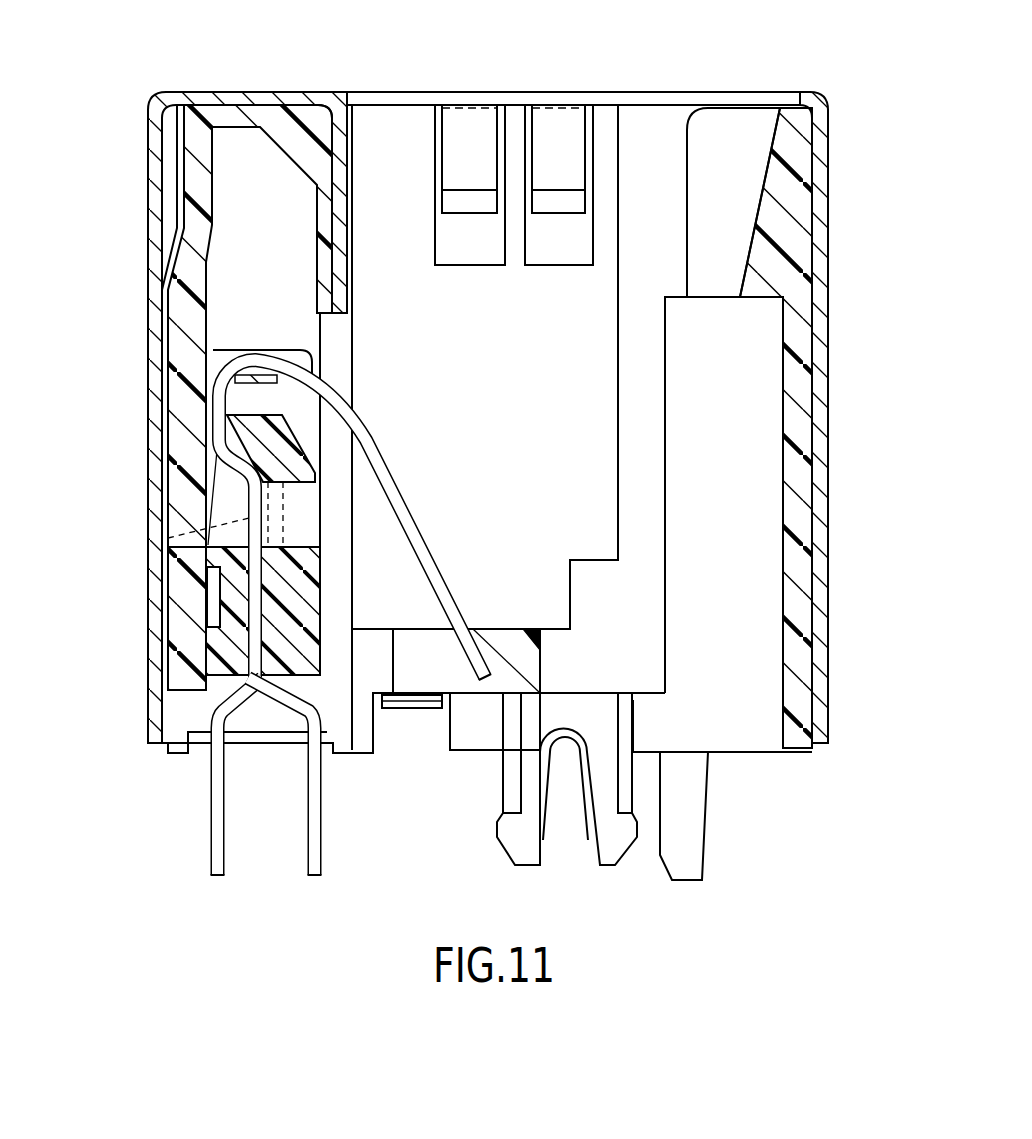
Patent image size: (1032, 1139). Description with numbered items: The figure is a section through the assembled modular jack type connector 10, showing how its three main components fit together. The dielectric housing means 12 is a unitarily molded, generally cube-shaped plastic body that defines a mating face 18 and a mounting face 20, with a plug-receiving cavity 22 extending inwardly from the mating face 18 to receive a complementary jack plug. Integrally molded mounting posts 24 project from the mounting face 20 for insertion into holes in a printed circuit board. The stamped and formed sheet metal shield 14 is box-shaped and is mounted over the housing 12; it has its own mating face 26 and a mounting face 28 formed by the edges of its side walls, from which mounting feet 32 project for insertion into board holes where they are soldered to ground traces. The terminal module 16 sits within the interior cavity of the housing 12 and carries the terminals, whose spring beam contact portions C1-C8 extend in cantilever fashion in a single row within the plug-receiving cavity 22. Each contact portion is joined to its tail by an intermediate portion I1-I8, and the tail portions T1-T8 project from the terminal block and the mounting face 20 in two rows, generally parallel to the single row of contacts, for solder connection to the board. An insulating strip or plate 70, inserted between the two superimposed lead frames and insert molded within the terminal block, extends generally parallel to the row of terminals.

The modular jack type connector 10 is at (797, 55).
The dielectric housing means 12 is at (800, 510).
The shield 14 is at (818, 370).
The terminal module 16 is at (219, 364).
The mating face 18 is at (717, 106).
The mounting face 20 is at (740, 752).
The plug-receiving cavity 22 is at (392, 298).
The mounting posts 24 is at (530, 840).
The mating face 26 is at (222, 92).
The mounting face 28 is at (818, 748).
The mounting feet 32 is at (687, 837).
The insulating strip or plate 70 is at (252, 610).
The spring beam contact portions C1-C8 is at (402, 510).
The intermediate portions I1-I8 is at (255, 536).
The tail portions T1-T8 is at (318, 847).